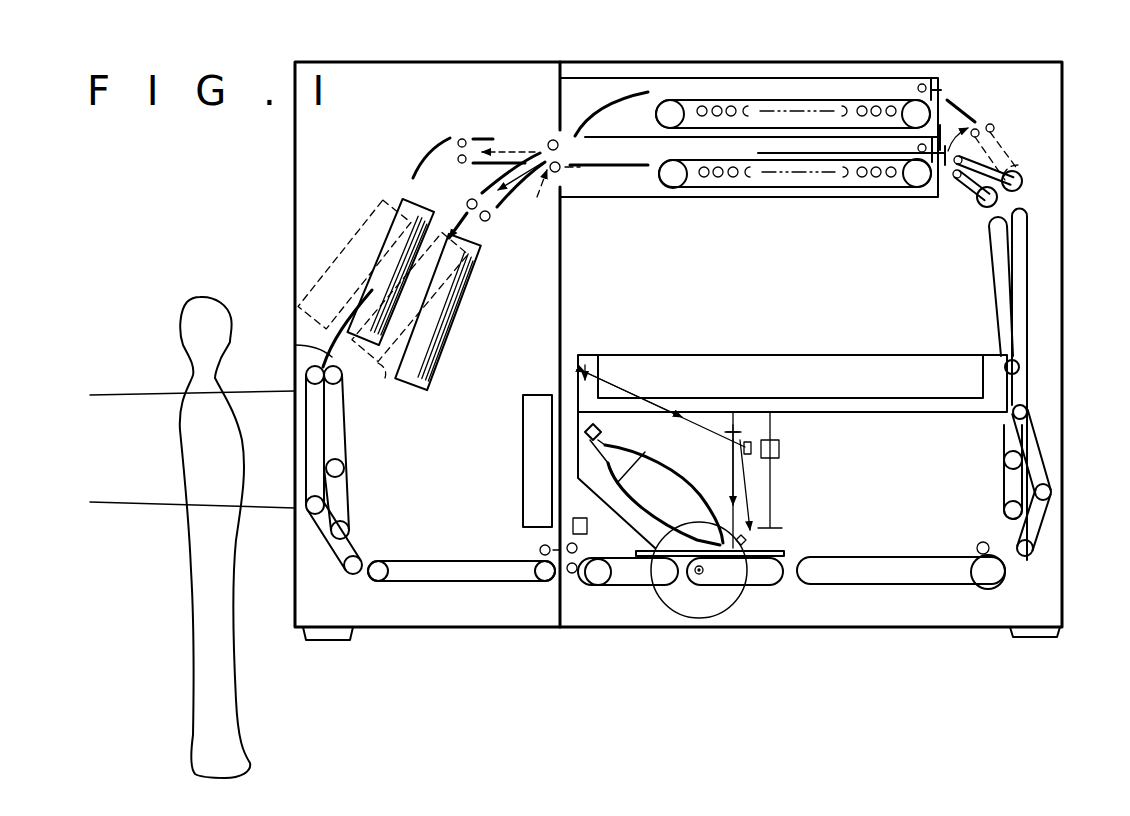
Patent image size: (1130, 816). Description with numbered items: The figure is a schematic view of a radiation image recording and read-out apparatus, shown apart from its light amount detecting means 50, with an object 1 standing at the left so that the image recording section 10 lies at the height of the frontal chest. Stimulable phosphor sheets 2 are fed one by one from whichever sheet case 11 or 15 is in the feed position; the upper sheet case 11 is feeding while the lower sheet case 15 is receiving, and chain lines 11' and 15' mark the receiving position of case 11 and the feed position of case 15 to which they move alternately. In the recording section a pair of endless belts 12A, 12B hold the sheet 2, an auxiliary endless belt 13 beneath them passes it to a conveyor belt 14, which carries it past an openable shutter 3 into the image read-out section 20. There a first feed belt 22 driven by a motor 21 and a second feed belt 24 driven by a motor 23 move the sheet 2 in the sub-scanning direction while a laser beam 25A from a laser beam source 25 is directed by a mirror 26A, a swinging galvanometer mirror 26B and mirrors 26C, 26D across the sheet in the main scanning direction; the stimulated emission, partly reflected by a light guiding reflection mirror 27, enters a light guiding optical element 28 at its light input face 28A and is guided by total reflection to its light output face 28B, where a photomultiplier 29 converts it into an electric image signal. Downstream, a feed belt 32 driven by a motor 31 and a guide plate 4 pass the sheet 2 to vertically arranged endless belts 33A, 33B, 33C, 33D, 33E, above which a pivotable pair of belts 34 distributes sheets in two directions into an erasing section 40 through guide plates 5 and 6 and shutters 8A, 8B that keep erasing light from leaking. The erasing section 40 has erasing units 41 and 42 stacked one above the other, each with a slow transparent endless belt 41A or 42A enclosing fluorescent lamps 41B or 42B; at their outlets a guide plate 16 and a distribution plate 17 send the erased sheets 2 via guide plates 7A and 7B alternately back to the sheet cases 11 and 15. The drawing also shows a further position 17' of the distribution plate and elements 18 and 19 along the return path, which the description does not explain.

The object 1 is at (180, 313).
The stimulable phosphor sheet 2 is at (295, 345).
The openable shutter 3 is at (538, 548).
The guide plate 4 is at (1007, 553).
The guide plate 5 is at (972, 118).
The guide plate 6 is at (945, 165).
The guide plate 7A is at (603, 115).
The guide plate 7B is at (604, 166).
The shutter 8A is at (941, 90).
The shutter 8B is at (940, 165).
The image recording section 10 is at (360, 465).
The sheet case 11 is at (390, 264).
The chain line 11' is at (353, 264).
The endless belt 12A is at (306, 425).
The endless belt 12B is at (350, 430).
The auxiliary endless belt 13 is at (330, 548).
The conveyor belt 14 is at (455, 582).
The sheet case 15 is at (443, 312).
The chain line 15' is at (410, 320).
The guide plate 16 is at (510, 202).
The distribution plate 17 is at (545, 140).
The feed rollers (alternate path) 17' is at (545, 196).
The feed rollers 18 is at (492, 222).
The guide 19 is at (428, 160).
The image read-out section 20 is at (752, 598).
The motor 21 is at (588, 585).
The first feed belt 22 is at (634, 585).
The motor 23 is at (727, 610).
The second feed belt 24 is at (778, 585).
The laser beam source 25 is at (768, 355).
The laser beam 25A is at (690, 490).
The mirror 26A is at (594, 370).
The galvanometer mirror 26B is at (776, 440).
The mirror 26C is at (755, 530).
The mirror 26D is at (745, 442).
The light guiding reflection mirror 27 is at (775, 548).
The light guiding optical element 28 is at (696, 495).
The light input face 28A is at (703, 574).
The light output face 28B is at (642, 455).
The photomultiplier 29 is at (578, 512).
The motor 31 is at (998, 585).
The feed belt 32 is at (882, 583).
The endless belt 33A is at (1043, 518).
The endless belt 33B is at (1043, 452).
The endless belt 33C is at (1027, 252).
The endless belt 33D is at (990, 272).
The endless belt 33E is at (1004, 472).
The pair of belts 34 is at (1003, 160).
The erasing section 40 is at (865, 78).
The erasing unit 41 is at (800, 95).
The transparent endless belt 41A is at (762, 99).
The fluorescent lamps 41B is at (731, 106).
The erasing unit 42 is at (812, 190).
The transparent endless belt 42A is at (762, 187).
The fluorescent lamps 42B is at (718, 178).
The light amount detecting means 50 is at (612, 62).